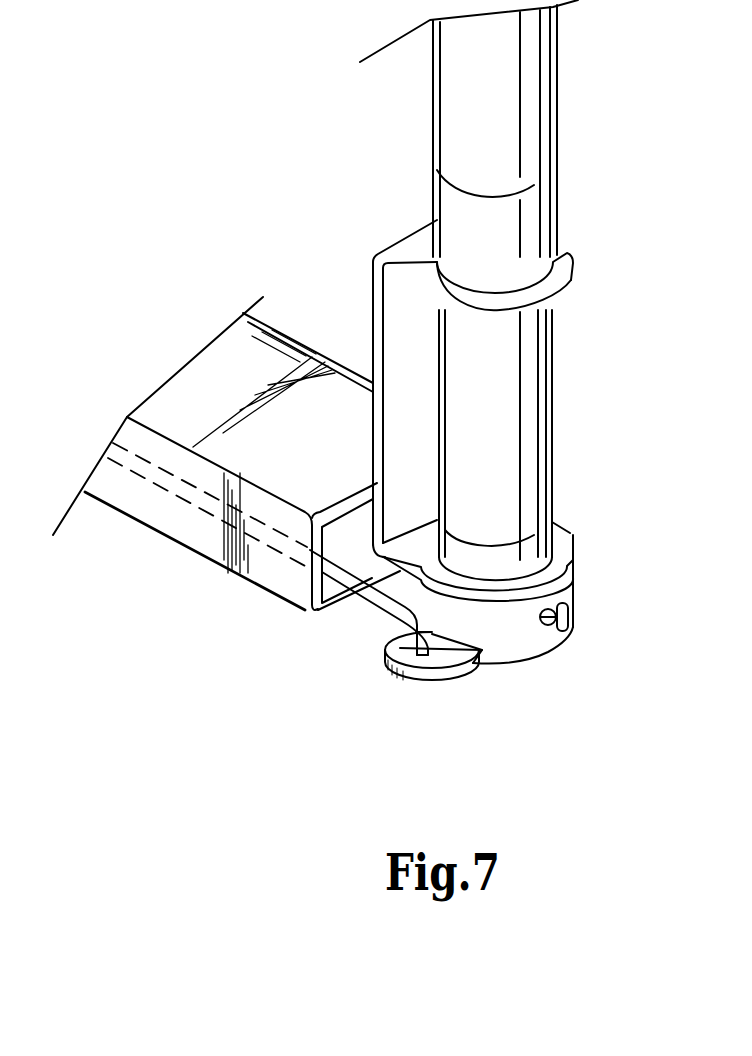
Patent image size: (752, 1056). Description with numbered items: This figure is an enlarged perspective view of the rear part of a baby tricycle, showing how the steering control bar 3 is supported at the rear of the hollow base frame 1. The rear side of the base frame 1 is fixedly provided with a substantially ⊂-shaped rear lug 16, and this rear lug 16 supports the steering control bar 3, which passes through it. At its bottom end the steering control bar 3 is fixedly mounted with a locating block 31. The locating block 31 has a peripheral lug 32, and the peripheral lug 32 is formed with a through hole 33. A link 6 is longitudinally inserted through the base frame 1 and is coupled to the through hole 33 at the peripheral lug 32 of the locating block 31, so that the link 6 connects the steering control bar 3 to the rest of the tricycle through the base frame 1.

The base frame 1 is at (187, 530).
The steering control bar 3 is at (532, 119).
The link 6 is at (383, 600).
The rear lug 16 is at (402, 312).
The locating block 31 is at (512, 643).
The peripheral lug 32 is at (450, 657).
The through hole 33 is at (418, 653).